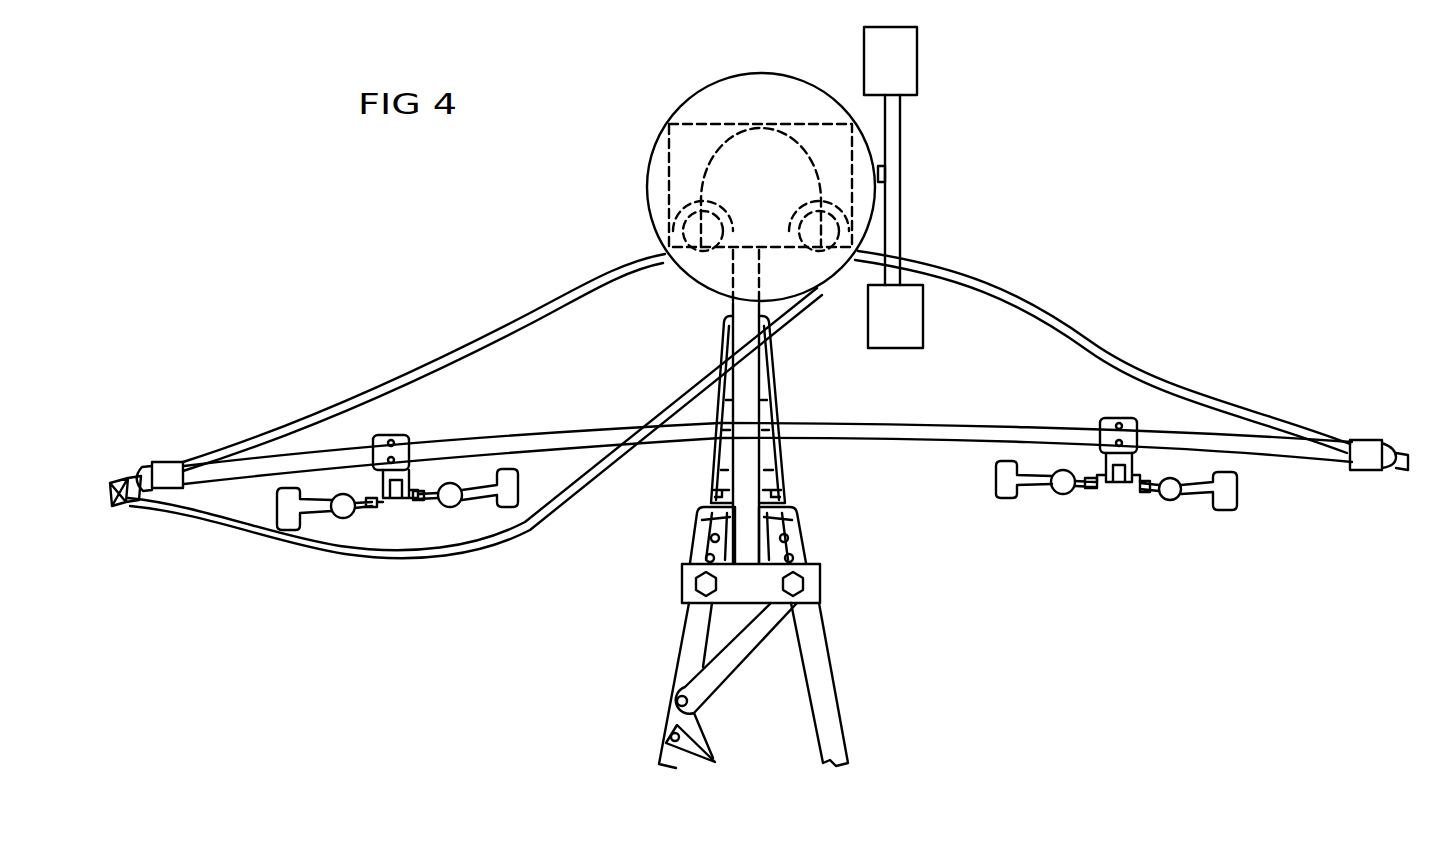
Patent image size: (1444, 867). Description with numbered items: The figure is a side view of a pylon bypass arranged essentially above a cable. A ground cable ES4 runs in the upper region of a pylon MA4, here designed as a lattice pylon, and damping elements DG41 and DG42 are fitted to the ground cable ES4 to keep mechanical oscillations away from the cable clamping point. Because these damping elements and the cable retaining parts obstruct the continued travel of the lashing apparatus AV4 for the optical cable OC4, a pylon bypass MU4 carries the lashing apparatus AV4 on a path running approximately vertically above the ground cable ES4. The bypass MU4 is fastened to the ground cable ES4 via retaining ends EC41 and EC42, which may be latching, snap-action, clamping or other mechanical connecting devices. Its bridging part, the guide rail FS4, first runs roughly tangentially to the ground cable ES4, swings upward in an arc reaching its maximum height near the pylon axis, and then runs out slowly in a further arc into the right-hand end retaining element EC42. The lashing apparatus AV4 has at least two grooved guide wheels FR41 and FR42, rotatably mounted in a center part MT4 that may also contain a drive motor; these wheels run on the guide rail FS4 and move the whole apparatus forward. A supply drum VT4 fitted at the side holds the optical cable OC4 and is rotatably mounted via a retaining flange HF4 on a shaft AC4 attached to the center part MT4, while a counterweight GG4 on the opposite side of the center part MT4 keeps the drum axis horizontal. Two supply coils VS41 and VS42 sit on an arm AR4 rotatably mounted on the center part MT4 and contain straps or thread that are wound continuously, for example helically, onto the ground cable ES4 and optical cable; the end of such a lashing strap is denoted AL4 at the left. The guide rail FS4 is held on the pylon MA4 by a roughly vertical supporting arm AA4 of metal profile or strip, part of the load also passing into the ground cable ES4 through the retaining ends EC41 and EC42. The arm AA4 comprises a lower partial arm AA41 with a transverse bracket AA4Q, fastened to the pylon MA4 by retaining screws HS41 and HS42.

The supply drum VT4 is at (757, 72).
The center part MT4 is at (672, 160).
The retaining flange HF4 is at (772, 158).
The counterweight GG4 is at (712, 152).
The lashing apparatus AV4 is at (645, 171).
The guide wheel FR41 is at (690, 224).
The guide wheel FR42 is at (860, 240).
The supply coil VS41 is at (905, 57).
The supply coil VS42 is at (912, 320).
The arm AR4 is at (900, 192).
The shaft AC4 is at (882, 165).
The pylon bypass MU4 is at (1034, 315).
The guide rail FS4 is at (524, 305).
The ground cable ES4 is at (880, 437).
The retaining end EC41 is at (170, 468).
The retaining end EC42 is at (1367, 470).
The end of lashing strap AL4 is at (121, 481).
The optical cable OC4 is at (132, 503).
The damping element DG41 is at (453, 498).
The damping element DG42 is at (1062, 485).
The arm AA4 is at (748, 475).
The lower partial arm AA41 is at (752, 536).
The transverse bracket AA4Q is at (810, 573).
The retaining screw HS41 is at (700, 583).
The retaining screw HS42 is at (800, 589).
The pylon MA4 is at (823, 692).